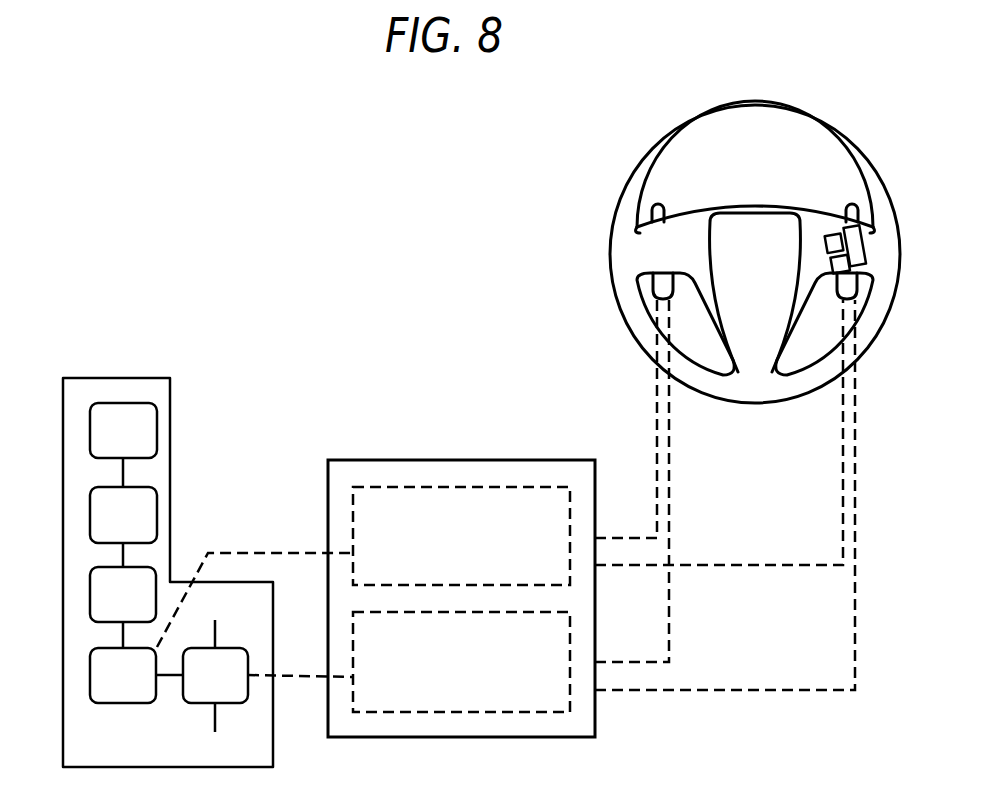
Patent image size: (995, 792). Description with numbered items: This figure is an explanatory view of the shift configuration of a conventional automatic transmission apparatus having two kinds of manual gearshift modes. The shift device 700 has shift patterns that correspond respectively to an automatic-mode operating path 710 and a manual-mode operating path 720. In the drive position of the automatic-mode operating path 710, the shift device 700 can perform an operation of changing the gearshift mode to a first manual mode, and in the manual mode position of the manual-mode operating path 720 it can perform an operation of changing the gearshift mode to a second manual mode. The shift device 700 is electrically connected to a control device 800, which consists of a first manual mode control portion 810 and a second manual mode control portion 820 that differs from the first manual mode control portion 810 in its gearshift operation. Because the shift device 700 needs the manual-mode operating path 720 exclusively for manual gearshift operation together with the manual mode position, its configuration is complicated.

The shift device 700 is at (143, 378).
The automatic-mode operating path 710 is at (123, 635).
The manual-mode operating path 720 is at (217, 635).
The control device 800 is at (477, 460).
The first manual mode control portion 810 is at (503, 712).
The second manual mode control portion 820 is at (420, 487).